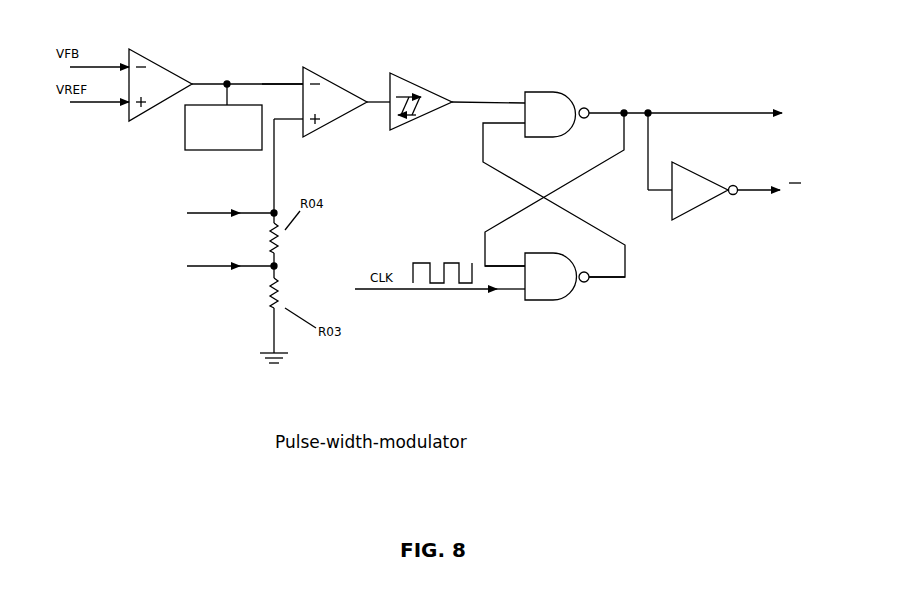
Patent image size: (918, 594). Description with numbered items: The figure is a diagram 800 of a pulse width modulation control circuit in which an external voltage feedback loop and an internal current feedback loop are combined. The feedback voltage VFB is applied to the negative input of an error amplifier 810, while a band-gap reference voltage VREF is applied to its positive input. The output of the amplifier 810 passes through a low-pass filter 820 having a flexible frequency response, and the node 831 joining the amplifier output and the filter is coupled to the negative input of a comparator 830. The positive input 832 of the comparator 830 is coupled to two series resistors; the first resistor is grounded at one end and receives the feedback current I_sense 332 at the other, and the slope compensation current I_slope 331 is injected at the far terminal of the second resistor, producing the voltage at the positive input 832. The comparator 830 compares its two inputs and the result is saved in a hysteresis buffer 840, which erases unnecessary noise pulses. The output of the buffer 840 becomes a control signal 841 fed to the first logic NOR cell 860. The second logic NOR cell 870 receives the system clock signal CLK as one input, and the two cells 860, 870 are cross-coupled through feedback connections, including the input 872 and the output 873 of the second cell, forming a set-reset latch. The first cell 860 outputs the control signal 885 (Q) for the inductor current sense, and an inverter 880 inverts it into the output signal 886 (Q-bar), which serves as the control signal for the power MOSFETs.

The diagram 800 is at (70, 18).
The amplifier 810 is at (164, 84).
The low-pass filter 820 is at (237, 134).
The comparator 830 is at (352, 108).
The node 831 is at (301, 78).
The positive input 832 is at (292, 125).
The hysteresis buffer 840 is at (416, 94).
The control signal 841 is at (520, 97).
The first logic NOR cell 860 is at (562, 120).
The second logic NOR cell 870 is at (562, 284).
The input of second NAND gate 872 is at (514, 262).
The output of second NAND gate 873 is at (594, 273).
The inverter 880 is at (707, 198).
The control signal 885 is at (752, 115).
The output signal 886 is at (758, 192).
The slope compensation current I_slope 331 is at (197, 211).
The feedback current I_sense 332 is at (197, 272).